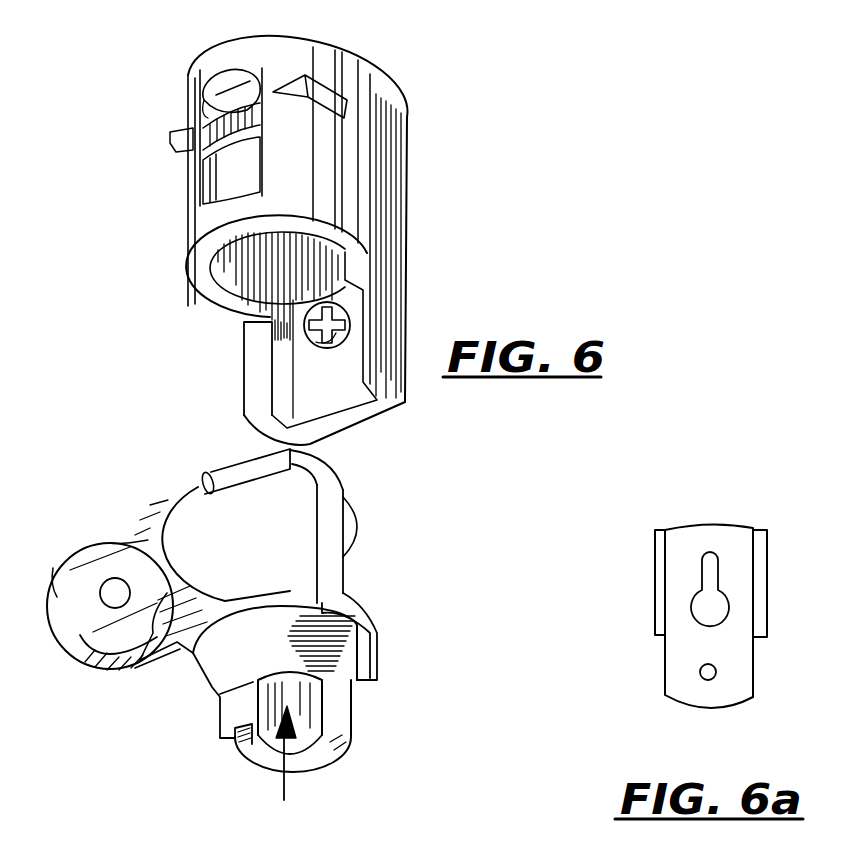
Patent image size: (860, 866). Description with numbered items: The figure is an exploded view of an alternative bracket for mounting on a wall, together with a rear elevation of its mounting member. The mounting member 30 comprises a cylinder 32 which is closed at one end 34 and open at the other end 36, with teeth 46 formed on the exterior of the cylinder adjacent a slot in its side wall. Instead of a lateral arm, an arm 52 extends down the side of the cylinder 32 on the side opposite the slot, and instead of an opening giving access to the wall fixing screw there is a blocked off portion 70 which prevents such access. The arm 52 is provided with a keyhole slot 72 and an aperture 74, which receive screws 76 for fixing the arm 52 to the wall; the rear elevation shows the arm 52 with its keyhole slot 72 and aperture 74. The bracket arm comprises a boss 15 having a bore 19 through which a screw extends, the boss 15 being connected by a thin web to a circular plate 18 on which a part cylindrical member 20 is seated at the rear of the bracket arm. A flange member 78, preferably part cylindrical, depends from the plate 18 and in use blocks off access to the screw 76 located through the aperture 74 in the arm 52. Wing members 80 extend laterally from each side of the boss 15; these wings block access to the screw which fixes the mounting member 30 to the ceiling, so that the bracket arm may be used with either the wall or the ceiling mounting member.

In FIG. 6, the mounting member 30 is at (413, 213).
In FIG. 6, the closed end 34 is at (332, 47).
In FIG. 6, the blocked off portion 70 is at (228, 82).
In FIG. 6, the teeth 46 is at (195, 148).
In FIG. 6, the cylinder 32 is at (202, 270).
In FIG. 6A, the cylinder 32 is at (758, 552).
In FIG. 6, the open end 36 is at (234, 282).
In FIG. 6, the arm 52 is at (383, 330).
In FIG. 6A, the arm 52 is at (733, 652).
In FIG. 6, the screws 76 is at (308, 348).
In FIG. 6, the wing members 80 is at (243, 468).
In FIG. 6, the part cylindrical member 20 is at (330, 498).
In FIG. 6, the boss 15 is at (100, 553).
In FIG. 6, the bore 19 is at (112, 594).
In FIG. 6, the circular plate 18 is at (275, 675).
In FIG. 6, the flange member 78 is at (327, 692).
In FIG. 6A, the keyhole slot 72 is at (717, 608).
In FIG. 6A, the aperture 74 is at (703, 675).